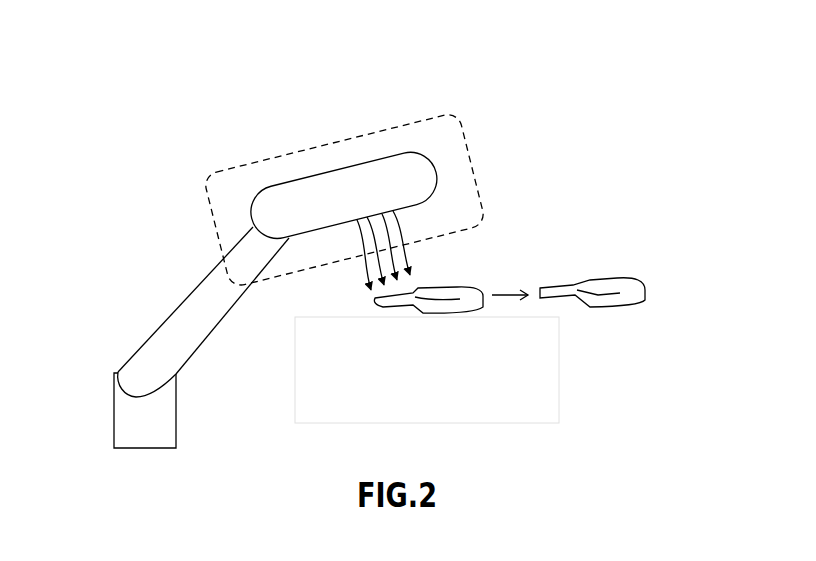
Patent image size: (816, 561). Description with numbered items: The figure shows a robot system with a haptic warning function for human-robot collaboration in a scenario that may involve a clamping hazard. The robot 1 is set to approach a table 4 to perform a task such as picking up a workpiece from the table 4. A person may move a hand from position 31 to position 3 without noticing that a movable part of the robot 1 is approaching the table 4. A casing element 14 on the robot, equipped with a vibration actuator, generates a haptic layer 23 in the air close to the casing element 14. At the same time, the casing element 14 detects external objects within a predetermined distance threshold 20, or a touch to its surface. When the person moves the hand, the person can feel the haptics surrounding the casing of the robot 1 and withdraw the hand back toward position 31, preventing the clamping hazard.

The robot 1 is at (210, 293).
The casing element 14 is at (328, 173).
The distance threshold 20 is at (427, 113).
The haptic layer 23 is at (415, 260).
The position 3 is at (482, 288).
The position 31 is at (642, 278).
The table 4 is at (559, 390).